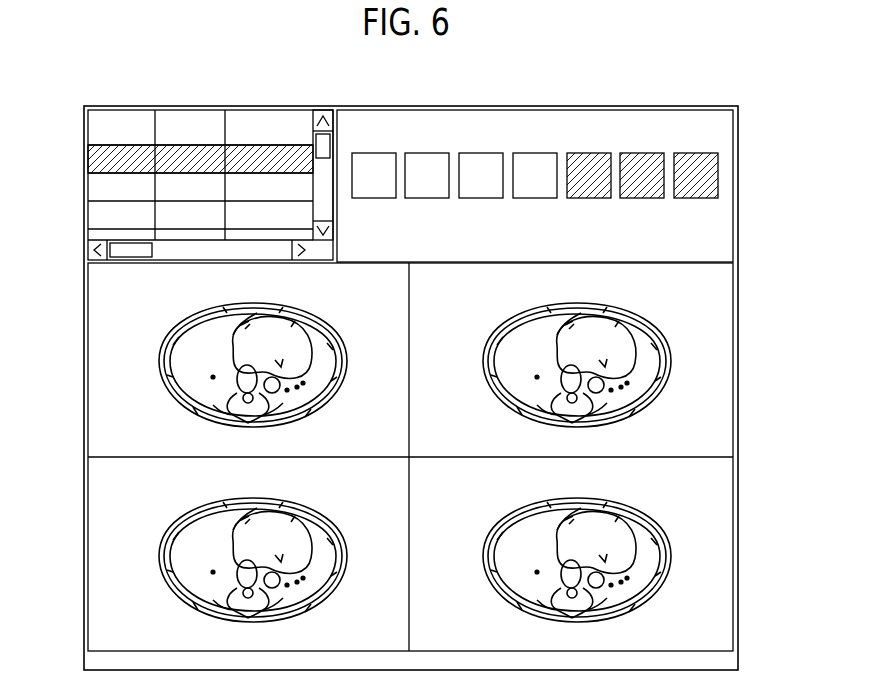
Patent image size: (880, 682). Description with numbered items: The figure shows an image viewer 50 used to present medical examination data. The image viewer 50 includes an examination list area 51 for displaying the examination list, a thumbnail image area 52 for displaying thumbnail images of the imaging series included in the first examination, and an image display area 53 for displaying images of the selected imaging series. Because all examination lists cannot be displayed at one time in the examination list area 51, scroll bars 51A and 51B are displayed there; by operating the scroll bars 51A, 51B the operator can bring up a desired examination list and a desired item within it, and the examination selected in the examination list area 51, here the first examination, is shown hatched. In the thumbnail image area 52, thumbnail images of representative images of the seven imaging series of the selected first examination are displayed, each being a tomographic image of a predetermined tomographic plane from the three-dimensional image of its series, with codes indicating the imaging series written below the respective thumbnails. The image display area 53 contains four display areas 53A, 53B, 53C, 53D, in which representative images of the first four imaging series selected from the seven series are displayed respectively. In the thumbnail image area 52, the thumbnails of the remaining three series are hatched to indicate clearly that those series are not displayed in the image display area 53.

The image viewer 50 is at (757, 86).
The examination list area 51 is at (161, 112).
The scroll bar 51A is at (333, 140).
The scroll bar 51B is at (121, 255).
The thumbnail image area 52 is at (727, 145).
The image display area 53 is at (751, 406).
The display area 53A is at (95, 365).
The display area 53B is at (727, 303).
The display area 53C is at (95, 495).
The display area 53D is at (727, 499).